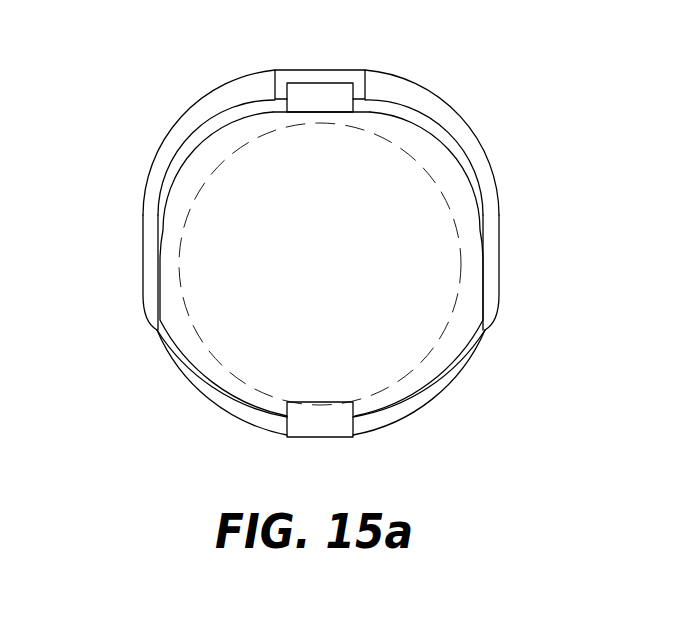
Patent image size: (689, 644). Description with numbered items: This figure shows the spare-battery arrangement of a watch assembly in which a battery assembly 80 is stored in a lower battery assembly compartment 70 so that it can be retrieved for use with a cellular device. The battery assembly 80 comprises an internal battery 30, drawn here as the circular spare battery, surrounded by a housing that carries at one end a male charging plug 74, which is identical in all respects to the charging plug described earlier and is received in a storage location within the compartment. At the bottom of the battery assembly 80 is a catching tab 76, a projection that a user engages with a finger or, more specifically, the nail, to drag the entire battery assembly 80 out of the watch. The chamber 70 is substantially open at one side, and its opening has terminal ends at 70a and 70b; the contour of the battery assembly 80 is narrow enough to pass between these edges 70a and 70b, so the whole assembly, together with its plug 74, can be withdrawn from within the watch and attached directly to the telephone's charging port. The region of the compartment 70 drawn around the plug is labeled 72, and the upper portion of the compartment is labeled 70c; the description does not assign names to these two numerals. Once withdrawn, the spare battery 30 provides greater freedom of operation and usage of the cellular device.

The internal battery 30 is at (348, 242).
The battery assembly compartment 70 is at (316, 231).
The terminal end of the compartment opening 70a is at (157, 330).
The terminal end of the compartment opening 70b is at (485, 330).
The top frame portion 70c is at (285, 77).
The top housing 72 is at (352, 69).
The male charging plug 74 is at (327, 98).
The catching tab 76 is at (313, 423).
The battery assembly 80 is at (450, 170).